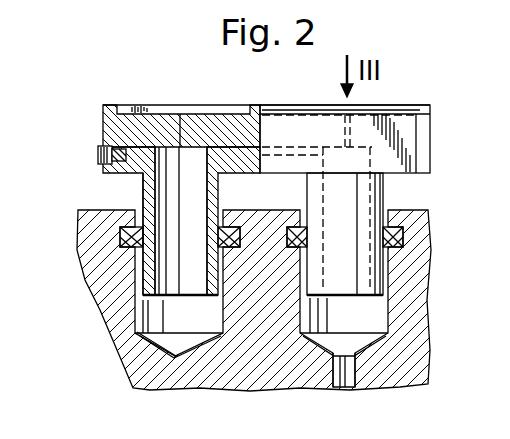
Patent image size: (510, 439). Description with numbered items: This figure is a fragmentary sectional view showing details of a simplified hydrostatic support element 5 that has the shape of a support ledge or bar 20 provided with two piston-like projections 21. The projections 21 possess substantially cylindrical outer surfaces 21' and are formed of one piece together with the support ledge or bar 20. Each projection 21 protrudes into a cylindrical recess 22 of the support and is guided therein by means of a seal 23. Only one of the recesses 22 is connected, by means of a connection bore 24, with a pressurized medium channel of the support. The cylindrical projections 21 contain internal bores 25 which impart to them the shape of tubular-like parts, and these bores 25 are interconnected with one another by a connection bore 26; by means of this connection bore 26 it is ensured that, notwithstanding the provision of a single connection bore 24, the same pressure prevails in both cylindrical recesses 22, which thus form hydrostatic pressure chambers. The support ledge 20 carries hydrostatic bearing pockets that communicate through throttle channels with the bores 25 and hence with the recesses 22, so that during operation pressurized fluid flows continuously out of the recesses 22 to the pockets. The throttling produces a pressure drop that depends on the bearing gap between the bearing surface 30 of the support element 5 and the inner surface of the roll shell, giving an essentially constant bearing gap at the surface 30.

The hydrostatic support element 5 is at (185, 99).
The support ledge or bar 20 is at (118, 125).
The piston-like projection 21 is at (262, 221).
The cylindrical outer surface 21' is at (93, 234).
The cylindrical recess 22 is at (158, 313).
The seal 23 is at (402, 233).
The connection bore 24 is at (343, 387).
The internal bore 25 is at (172, 258).
The connection bore 26 is at (217, 153).
The bearing surface 30 is at (393, 108).